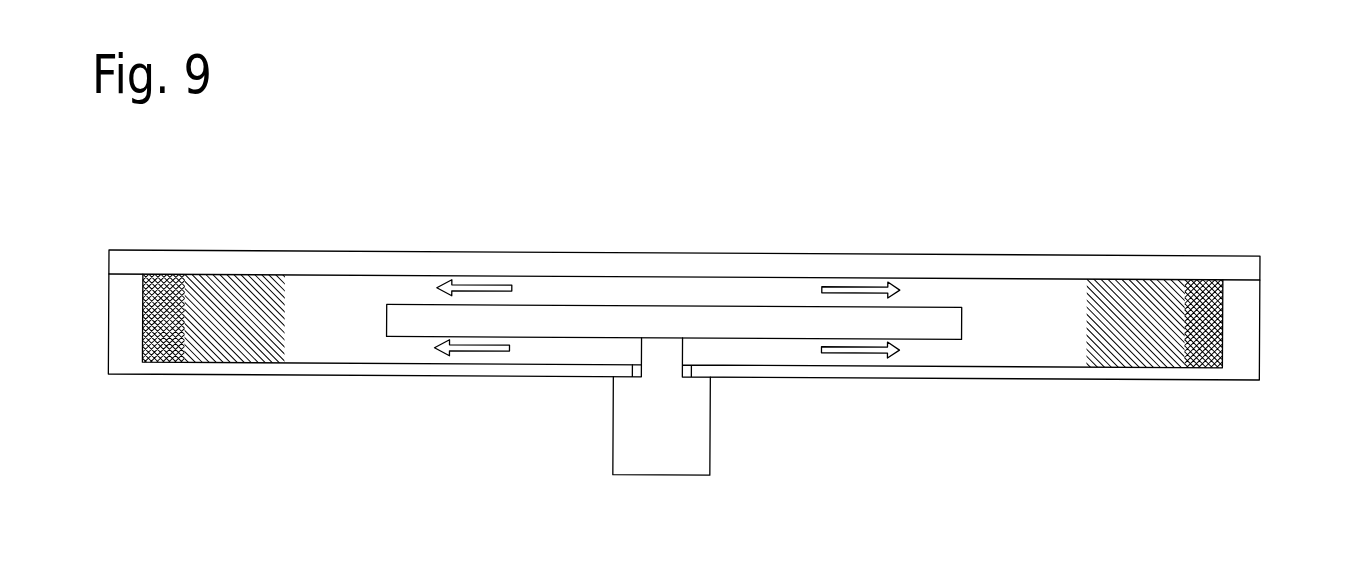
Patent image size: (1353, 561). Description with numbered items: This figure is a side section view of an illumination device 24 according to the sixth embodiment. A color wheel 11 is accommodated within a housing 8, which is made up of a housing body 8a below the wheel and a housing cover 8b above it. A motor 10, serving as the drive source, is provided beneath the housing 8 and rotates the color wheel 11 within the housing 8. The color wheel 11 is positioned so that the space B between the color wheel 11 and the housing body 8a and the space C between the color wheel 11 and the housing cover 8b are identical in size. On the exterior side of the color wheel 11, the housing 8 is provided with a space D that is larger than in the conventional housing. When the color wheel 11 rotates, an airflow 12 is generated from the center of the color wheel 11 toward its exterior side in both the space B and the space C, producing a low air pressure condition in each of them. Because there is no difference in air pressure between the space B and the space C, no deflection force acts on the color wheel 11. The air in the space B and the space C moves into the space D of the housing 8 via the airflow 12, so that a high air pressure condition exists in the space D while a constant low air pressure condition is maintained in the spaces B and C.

The illumination device 24 is at (1097, 112).
The housing 8 is at (1308, 167).
The housing body 8a is at (1250, 332).
The housing cover 8b is at (1233, 270).
The motor 10 is at (670, 462).
The color wheel 11 is at (670, 318).
The airflow 12 is at (477, 282).
The space B is at (410, 345).
The space C is at (415, 294).
The space D is at (228, 342).